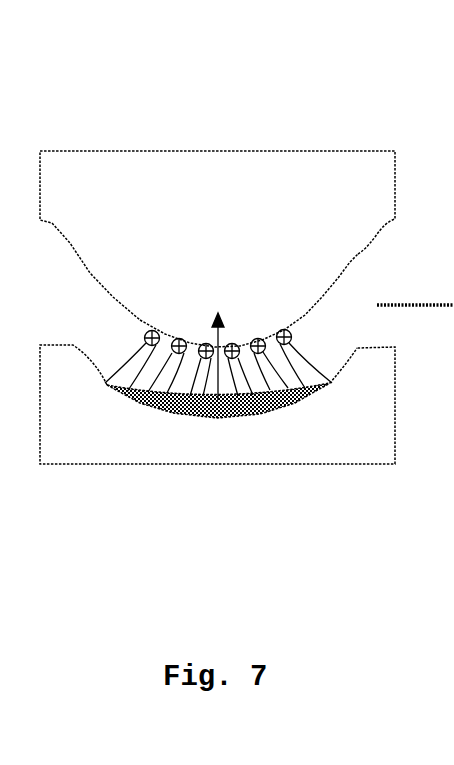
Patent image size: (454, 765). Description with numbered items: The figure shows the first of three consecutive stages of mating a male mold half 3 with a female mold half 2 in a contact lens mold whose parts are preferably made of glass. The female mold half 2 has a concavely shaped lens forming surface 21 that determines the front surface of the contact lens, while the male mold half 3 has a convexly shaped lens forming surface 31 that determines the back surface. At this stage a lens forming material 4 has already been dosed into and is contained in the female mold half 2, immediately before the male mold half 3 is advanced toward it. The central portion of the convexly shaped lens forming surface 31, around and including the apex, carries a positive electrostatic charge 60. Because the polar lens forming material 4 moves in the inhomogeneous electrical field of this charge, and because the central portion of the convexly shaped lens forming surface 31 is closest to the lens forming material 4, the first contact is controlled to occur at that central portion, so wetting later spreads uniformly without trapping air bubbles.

The male mold half 3 is at (220, 195).
The convexly shaped lens forming surface 31 is at (358, 254).
The female mold half 2 is at (218, 445).
The concavely shaped lens forming surface 21 is at (350, 364).
The lens forming material 4 is at (194, 410).
The electrostatic charge 60 is at (145, 338).